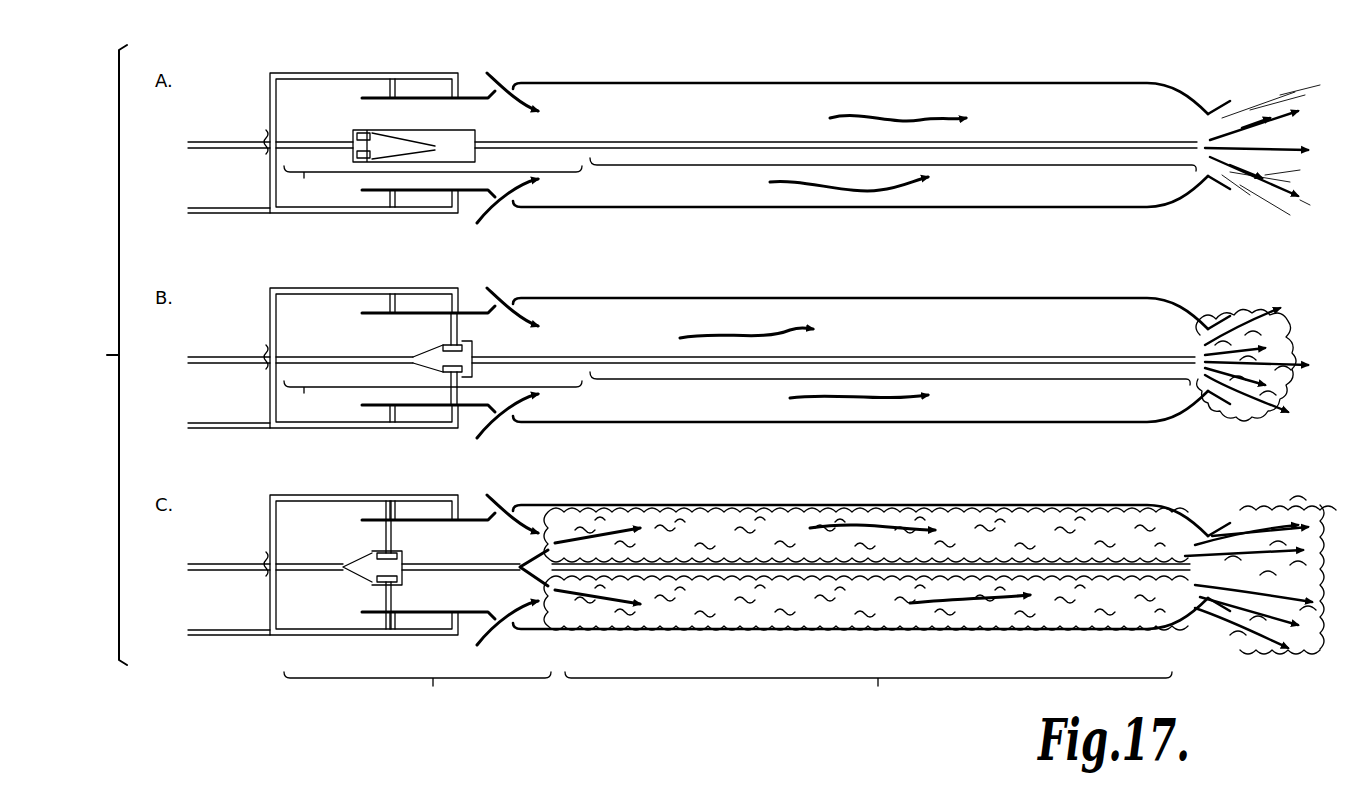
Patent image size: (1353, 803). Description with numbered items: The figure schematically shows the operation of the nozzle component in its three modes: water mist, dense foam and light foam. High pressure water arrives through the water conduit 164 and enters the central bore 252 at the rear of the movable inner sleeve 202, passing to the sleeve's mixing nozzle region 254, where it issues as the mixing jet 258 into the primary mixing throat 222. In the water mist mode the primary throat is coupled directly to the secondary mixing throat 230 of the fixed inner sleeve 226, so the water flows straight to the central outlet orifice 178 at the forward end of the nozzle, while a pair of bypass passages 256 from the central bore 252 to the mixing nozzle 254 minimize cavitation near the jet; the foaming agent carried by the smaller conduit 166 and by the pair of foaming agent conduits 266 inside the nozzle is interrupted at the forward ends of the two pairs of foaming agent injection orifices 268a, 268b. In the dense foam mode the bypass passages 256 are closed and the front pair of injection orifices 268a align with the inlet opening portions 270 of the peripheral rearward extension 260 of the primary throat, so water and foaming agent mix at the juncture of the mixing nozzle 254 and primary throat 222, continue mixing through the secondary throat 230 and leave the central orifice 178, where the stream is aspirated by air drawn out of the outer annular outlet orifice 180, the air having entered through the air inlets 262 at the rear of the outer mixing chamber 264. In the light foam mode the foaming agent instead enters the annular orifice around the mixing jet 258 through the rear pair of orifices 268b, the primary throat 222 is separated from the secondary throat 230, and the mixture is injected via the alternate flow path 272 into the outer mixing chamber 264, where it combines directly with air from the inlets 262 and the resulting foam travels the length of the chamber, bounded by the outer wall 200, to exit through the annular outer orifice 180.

The water conduit 164 is at (232, 140).
The foaming agent conduit 166 is at (228, 214).
The central outlet orifice 178 is at (1210, 146).
The outer annular shaped outlet orifice 180 is at (1208, 114).
The catheter tube wall 200 is at (880, 83).
The movable inner sleeve 202 is at (433, 438).
The primary mixing throat 222 is at (536, 142).
The fixed inner sleeve 226 is at (980, 167).
The secondary mixing throat 230 is at (684, 146).
The central bore 252 is at (292, 140).
The mixing nozzle region 254 is at (447, 131).
The bypass passages 256 is at (372, 133).
The mixing jet 258 is at (370, 552).
The peripheral rearward extension 260 is at (420, 352).
The air inlets 262 is at (506, 80).
The outer mixing chamber 264 is at (740, 100).
The foaming agent conduits 266 is at (310, 73).
The front pair of foaming agent injection orifices 268a is at (462, 82).
The rear pair of foaming agent injection orifices 268b is at (383, 92).
The inlet opening portions 270 is at (462, 322).
The alternate flow path 272 is at (540, 555).